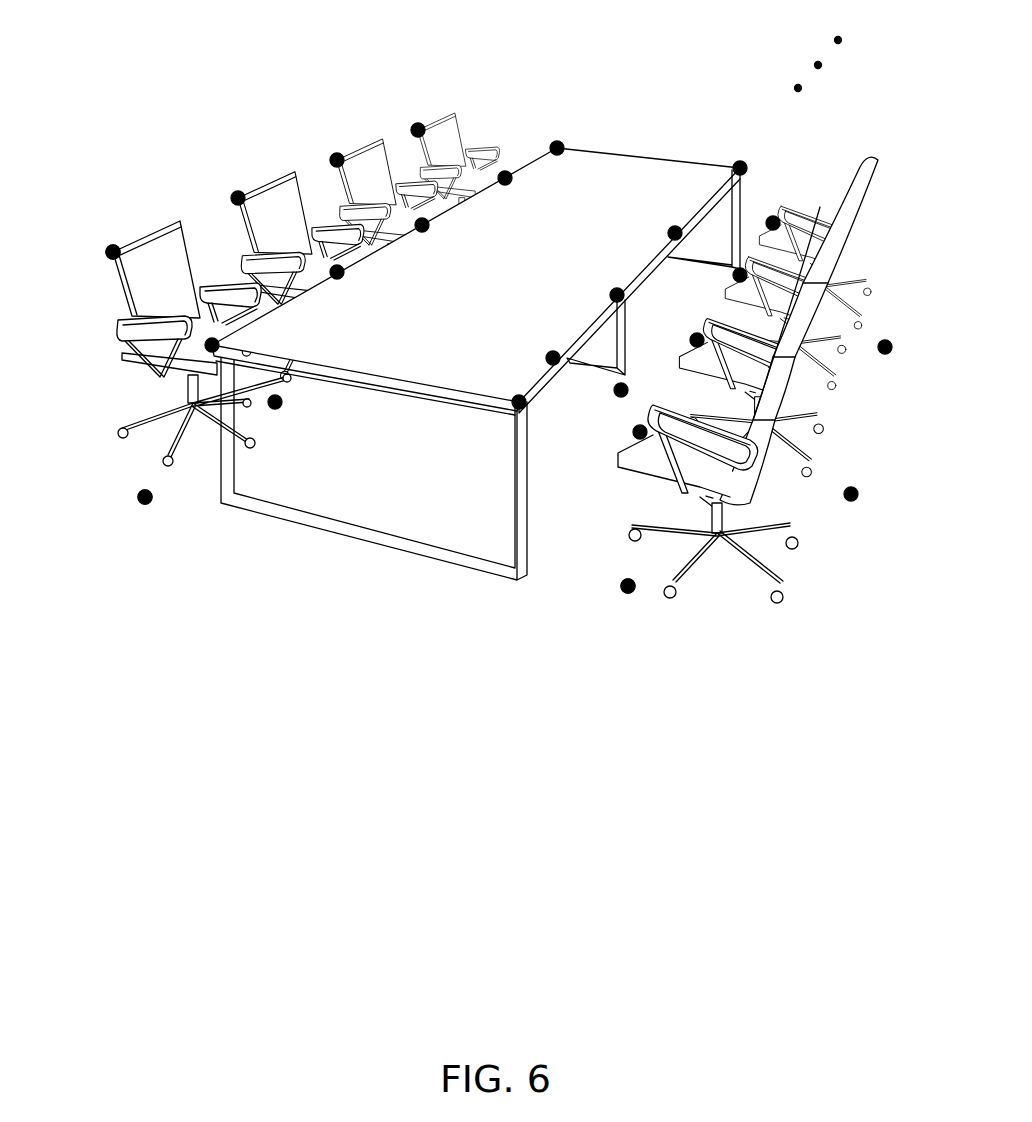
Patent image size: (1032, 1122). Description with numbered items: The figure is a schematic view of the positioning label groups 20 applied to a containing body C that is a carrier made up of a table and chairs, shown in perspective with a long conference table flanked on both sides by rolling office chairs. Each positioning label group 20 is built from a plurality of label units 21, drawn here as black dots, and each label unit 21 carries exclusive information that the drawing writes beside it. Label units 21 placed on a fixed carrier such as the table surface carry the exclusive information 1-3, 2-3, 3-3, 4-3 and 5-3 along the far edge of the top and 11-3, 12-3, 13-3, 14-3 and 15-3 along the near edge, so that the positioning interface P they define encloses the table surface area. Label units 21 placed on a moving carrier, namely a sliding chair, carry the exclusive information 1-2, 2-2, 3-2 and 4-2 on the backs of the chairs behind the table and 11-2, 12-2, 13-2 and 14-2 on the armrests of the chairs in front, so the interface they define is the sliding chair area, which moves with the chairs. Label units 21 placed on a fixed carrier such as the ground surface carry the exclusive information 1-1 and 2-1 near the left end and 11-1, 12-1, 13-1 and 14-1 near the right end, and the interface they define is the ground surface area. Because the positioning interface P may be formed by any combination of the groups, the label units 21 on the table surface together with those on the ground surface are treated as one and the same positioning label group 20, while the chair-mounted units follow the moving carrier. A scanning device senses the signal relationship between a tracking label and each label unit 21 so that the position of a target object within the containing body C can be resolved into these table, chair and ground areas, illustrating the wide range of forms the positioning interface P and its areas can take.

The positioning interface P is at (152, 247).
The containing body C is at (632, 167).
The positioning label group 20 is at (78, 382).
The label unit 21 is at (110, 253).
The label unit exclusive information 1-1 is at (121, 488).
The label unit exclusive information 1-2 is at (89, 248).
The label unit exclusive information 1-3 is at (242, 337).
The label unit exclusive information 2-1 is at (294, 419).
The label unit exclusive information 2-2 is at (216, 189).
The label unit exclusive information 2-3 is at (357, 284).
The label unit exclusive information 3-2 is at (315, 151).
The label unit exclusive information 3-3 is at (442, 238).
The label unit exclusive information 4-2 is at (399, 117).
The label unit exclusive information 4-3 is at (522, 193).
The label unit exclusive information 5-3 is at (558, 133).
The label unit exclusive information 11-1 is at (594, 576).
The label unit exclusive information 11-2 is at (607, 439).
The label unit exclusive information 11-3 is at (484, 423).
The label unit exclusive information 12-1 is at (855, 513).
The label unit exclusive information 12-2 is at (668, 344).
The label unit exclusive information 12-3 is at (531, 336).
The label unit exclusive information 13-1 is at (594, 389).
The label unit exclusive information 13-2 is at (710, 283).
The label unit exclusive information 13-3 is at (593, 276).
The label unit exclusive information 14-1 is at (887, 371).
The label unit exclusive information 14-2 is at (768, 206).
The label unit exclusive information 14-3 is at (662, 216).
The label unit exclusive information 15-3 is at (742, 151).